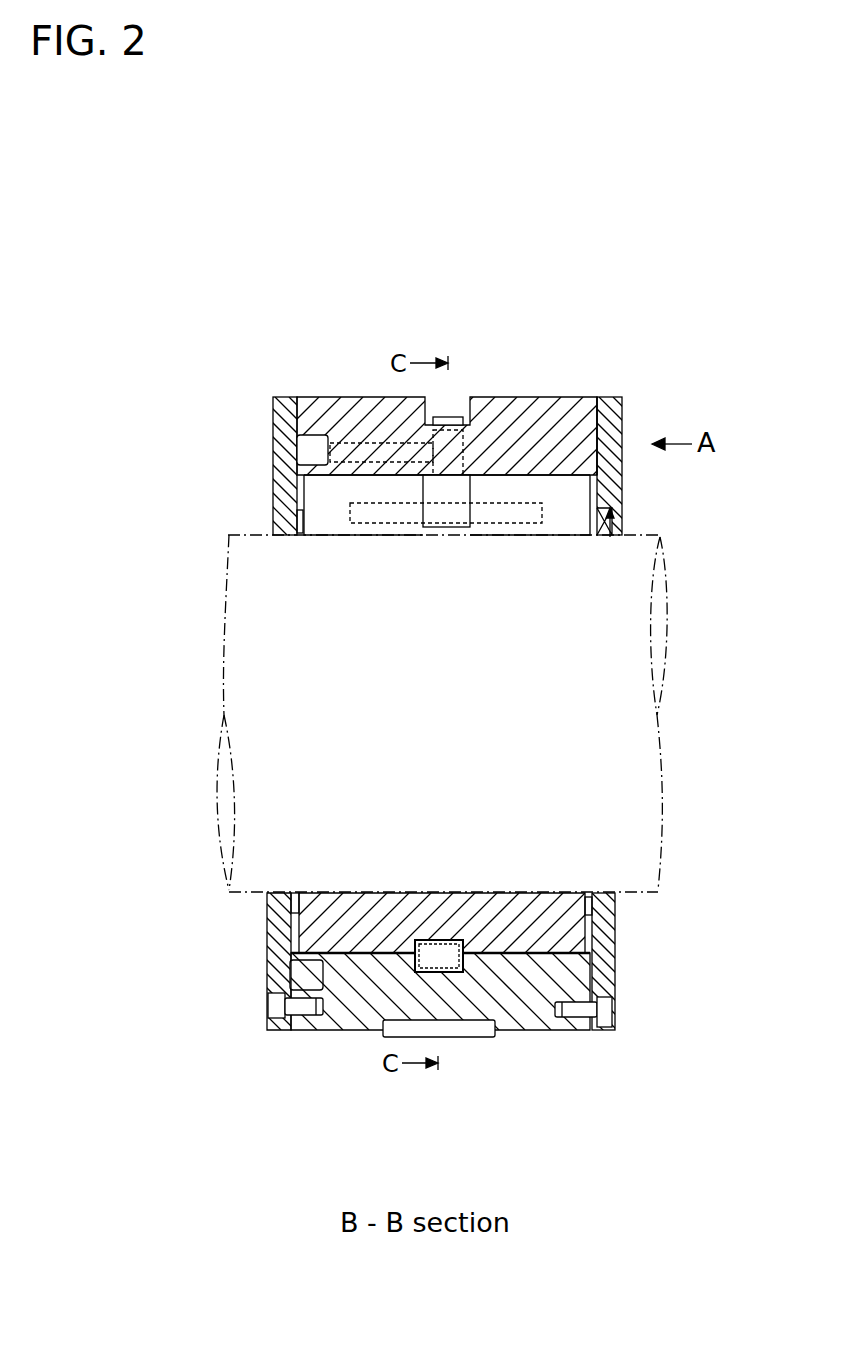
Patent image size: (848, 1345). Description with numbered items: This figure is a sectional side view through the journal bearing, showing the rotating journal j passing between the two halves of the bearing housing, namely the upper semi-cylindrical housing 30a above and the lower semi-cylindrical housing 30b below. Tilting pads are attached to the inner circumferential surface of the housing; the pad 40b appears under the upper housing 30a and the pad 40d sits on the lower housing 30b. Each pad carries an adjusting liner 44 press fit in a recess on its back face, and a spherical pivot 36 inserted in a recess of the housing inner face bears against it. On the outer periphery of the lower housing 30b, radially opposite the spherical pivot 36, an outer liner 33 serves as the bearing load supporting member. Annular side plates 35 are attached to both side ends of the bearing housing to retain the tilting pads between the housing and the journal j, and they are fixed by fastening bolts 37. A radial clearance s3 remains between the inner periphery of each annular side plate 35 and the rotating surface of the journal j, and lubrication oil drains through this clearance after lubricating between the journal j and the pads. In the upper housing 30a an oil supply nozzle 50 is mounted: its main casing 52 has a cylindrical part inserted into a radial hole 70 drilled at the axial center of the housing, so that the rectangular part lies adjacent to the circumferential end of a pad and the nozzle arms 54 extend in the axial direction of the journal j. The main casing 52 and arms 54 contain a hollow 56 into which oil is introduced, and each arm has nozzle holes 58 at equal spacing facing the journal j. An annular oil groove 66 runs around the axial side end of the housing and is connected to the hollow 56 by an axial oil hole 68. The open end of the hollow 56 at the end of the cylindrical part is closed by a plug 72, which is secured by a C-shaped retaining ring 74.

The upper semi-cylindrical housing 30a is at (540, 397).
The lower semi-cylindrical housing 30b is at (523, 1020).
The outer liner 33 is at (467, 1032).
The annular side plate 35 is at (282, 500).
The spherical pivot 36 is at (430, 972).
The fastening bolt 37 is at (270, 1005).
The tilting pad 40b is at (567, 527).
The tilting pad 40d is at (388, 893).
The adjusting liner 44 is at (455, 940).
The oil supply nozzle 50 is at (515, 503).
The main casing 52 is at (407, 488).
The nozzle arm 54 is at (343, 533).
The hollow 56 is at (600, 430).
The nozzle hole 58 is at (493, 528).
The annular oil groove 66 is at (293, 445).
The axial oil hole 68 is at (318, 533).
The radial hole 70 is at (340, 536).
The plug 72 is at (462, 398).
The C-shaped retaining ring 74 is at (478, 398).
The journal j is at (660, 628).
The radial clearance s3 is at (624, 536).